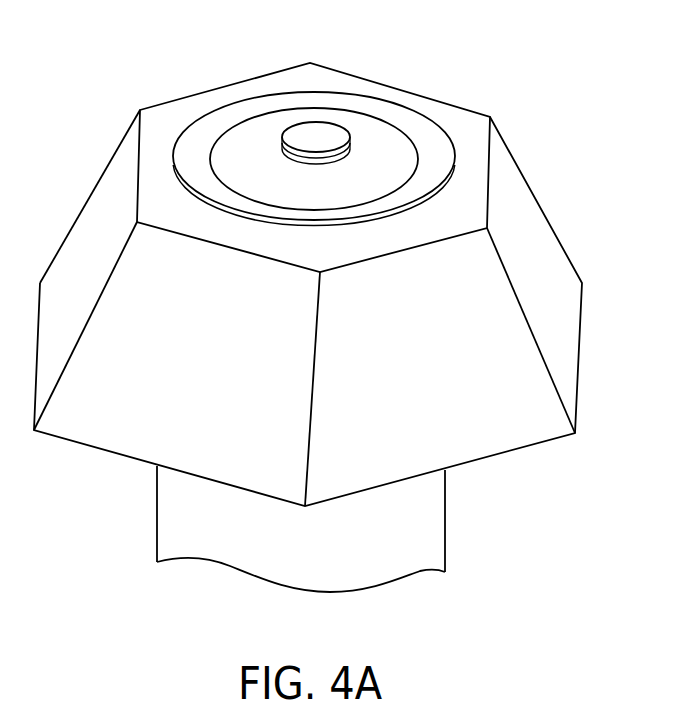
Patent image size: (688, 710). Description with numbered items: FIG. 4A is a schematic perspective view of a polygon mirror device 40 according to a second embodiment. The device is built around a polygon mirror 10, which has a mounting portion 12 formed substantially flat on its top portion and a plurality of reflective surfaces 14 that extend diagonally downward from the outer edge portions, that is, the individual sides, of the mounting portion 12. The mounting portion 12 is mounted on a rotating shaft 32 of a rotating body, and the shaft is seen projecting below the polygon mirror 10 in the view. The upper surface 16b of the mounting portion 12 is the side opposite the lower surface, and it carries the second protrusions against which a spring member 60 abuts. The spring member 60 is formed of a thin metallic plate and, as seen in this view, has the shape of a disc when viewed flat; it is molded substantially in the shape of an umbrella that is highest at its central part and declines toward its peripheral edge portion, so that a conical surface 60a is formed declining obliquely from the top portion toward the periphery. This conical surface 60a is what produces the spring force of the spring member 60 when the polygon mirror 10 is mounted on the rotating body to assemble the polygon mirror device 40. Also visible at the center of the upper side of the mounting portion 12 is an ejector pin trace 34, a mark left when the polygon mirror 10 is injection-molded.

The polygon mirror 10 is at (339, 320).
The mounting portion 12 is at (172, 120).
The reflective surfaces 14 is at (565, 335).
The upper surface 16b is at (360, 88).
The rotating shaft 32 is at (268, 570).
The ejector pin traces 34 is at (300, 132).
The polygon mirror device 40 is at (468, 78).
The spring member 60 is at (266, 93).
The conical surface 60a is at (400, 140).